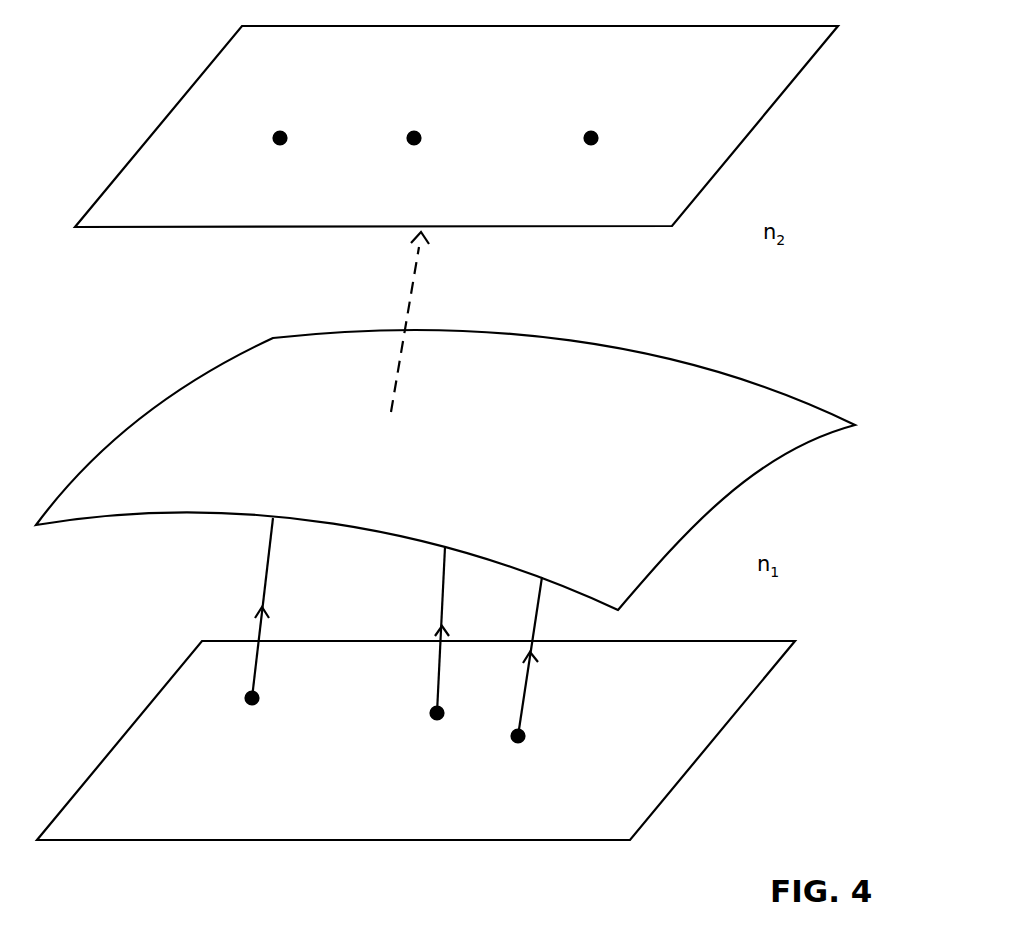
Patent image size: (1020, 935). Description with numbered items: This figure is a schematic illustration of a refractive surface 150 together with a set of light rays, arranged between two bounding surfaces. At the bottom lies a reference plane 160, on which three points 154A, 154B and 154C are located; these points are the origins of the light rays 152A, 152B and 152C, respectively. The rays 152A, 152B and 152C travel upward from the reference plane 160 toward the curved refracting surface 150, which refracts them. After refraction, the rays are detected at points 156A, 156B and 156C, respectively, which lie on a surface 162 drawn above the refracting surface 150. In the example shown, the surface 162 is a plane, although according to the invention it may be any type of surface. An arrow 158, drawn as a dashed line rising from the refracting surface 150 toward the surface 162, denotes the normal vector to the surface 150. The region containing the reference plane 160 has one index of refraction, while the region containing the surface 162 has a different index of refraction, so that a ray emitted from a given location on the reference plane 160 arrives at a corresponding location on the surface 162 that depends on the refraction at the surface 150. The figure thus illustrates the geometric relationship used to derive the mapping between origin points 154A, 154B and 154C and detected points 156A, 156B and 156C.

The refractive surface 150 is at (738, 410).
The light ray 152A is at (527, 683).
The light ray 152B is at (443, 598).
The light ray 152C is at (258, 653).
The point 154A is at (524, 736).
The point 154B is at (437, 719).
The point 154C is at (252, 704).
The point 156A is at (597, 138).
The point 156B is at (420, 138).
The point 156C is at (333, 117).
The arrow 158 is at (416, 265).
The reference plane 160 is at (153, 698).
The surface 162 is at (155, 128).